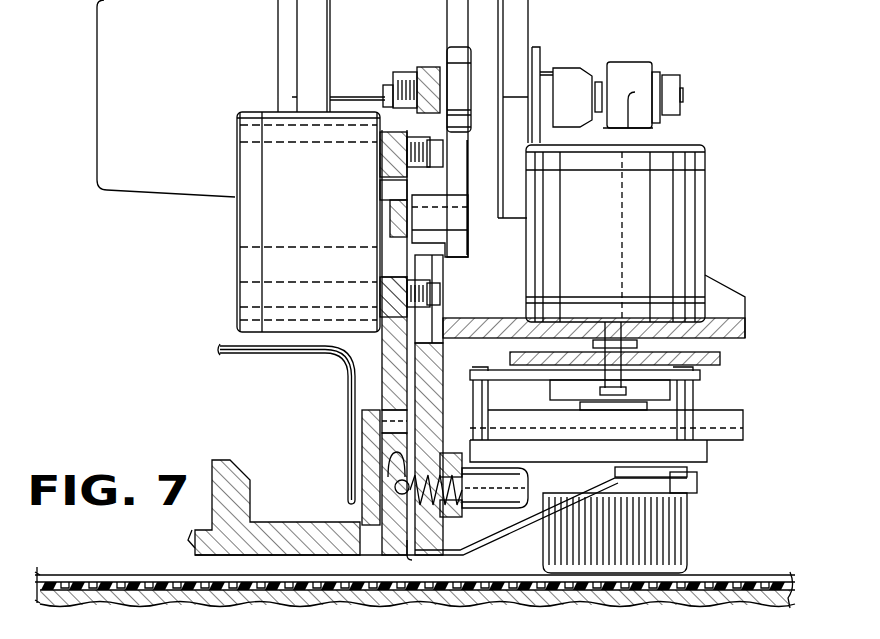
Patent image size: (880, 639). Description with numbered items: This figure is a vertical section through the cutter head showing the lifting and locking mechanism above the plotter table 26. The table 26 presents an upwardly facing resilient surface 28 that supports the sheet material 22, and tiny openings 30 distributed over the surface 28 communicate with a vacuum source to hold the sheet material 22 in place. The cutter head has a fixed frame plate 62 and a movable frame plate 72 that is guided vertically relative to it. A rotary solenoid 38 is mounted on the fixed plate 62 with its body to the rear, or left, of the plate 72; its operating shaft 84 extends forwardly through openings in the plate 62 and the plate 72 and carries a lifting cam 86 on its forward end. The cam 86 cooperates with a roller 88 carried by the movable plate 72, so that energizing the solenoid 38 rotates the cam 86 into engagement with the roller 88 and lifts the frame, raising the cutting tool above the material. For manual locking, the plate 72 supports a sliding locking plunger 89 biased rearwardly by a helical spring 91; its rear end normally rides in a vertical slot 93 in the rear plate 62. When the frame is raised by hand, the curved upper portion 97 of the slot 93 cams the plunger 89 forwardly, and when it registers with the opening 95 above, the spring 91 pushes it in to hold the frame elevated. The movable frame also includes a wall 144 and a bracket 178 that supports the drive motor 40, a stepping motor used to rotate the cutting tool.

The sheet material 22 is at (80, 580).
The table 26 is at (140, 596).
The upwardly facing surface 28 is at (60, 578).
The tiny openings 30 is at (138, 582).
The rotary solenoid 38 is at (252, 262).
The drive motor 40 is at (688, 255).
The plate 62 is at (392, 338).
The plate 72 is at (428, 363).
The operating shaft 84 is at (397, 222).
The lifting cam 86 is at (455, 165).
The roller 88 is at (458, 50).
The locking plunger 89 is at (522, 483).
The helical spring 91 is at (455, 470).
The vertical slot 93 is at (402, 552).
The opening 95 is at (390, 426).
The curved upper portion 97 is at (397, 456).
The wall 144 is at (727, 297).
The bracket 178 is at (733, 334).